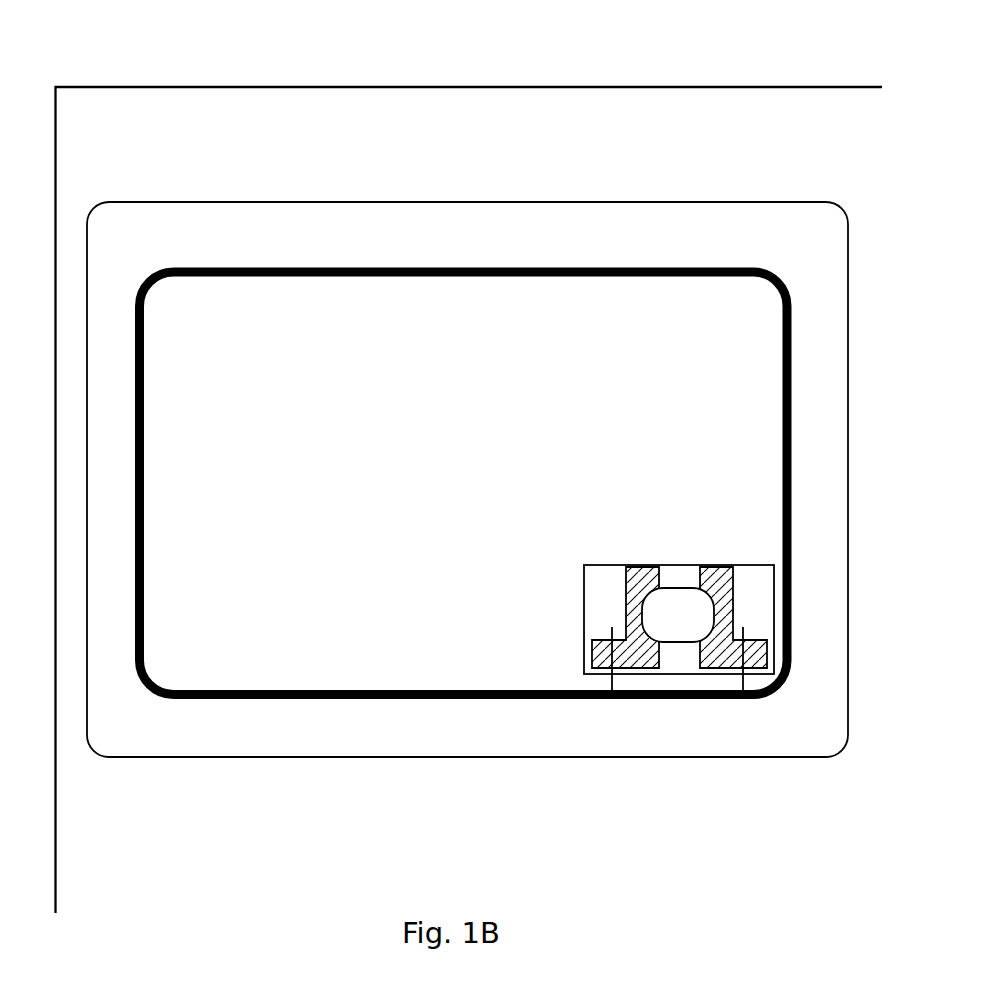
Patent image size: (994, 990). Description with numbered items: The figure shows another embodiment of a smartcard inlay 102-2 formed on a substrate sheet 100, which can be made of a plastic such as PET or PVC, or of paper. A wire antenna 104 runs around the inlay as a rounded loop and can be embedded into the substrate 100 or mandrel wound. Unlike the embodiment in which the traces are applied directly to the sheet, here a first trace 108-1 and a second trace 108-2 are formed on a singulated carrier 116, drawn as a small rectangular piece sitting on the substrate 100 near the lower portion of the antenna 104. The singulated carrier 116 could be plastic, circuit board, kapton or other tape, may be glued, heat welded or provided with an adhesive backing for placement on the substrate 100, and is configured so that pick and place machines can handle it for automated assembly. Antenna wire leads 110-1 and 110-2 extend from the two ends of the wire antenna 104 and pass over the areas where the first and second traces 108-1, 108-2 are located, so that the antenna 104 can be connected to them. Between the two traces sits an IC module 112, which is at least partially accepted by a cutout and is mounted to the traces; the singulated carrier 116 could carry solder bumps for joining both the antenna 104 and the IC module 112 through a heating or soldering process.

The substrate sheet 100 is at (730, 84).
The smartcard inlay 102-2 is at (334, 199).
The wire antenna 104 is at (322, 699).
The first trace 108-1 is at (632, 567).
The second trace 108-2 is at (727, 567).
The antenna wire lead 110-1 is at (612, 627).
The antenna wire lead 110-2 is at (743, 628).
The IC module 112 is at (681, 643).
The singulated carrier 116 is at (584, 577).